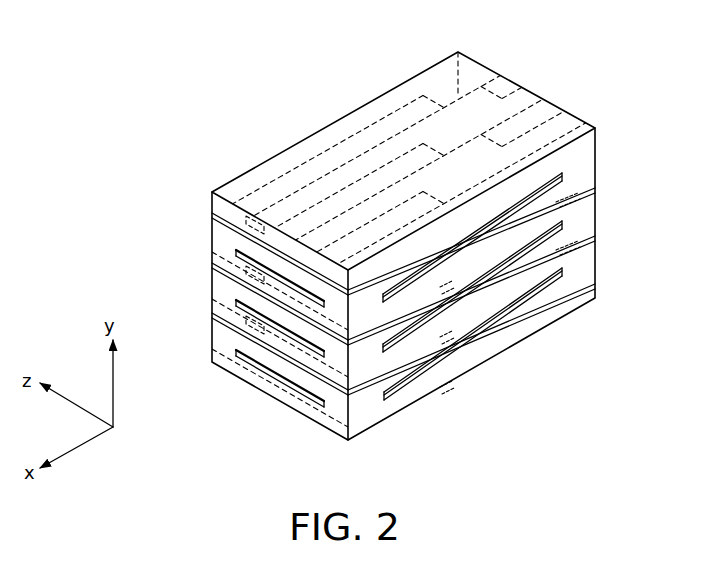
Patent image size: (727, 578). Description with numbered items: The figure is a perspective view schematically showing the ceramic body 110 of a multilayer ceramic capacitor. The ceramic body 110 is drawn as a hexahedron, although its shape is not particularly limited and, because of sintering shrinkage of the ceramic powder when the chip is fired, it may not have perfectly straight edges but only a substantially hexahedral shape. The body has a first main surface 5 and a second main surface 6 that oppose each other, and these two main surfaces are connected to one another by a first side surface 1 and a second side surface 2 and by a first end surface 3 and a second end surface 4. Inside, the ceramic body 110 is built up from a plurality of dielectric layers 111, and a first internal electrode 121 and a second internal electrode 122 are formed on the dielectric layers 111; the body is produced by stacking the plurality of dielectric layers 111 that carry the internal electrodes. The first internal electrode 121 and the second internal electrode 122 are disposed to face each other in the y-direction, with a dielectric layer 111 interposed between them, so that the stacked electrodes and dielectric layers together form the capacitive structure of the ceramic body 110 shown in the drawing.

The ceramic body 110 is at (201, 58).
The first side surface 1 is at (474, 288).
The second side surface 2 is at (362, 182).
The first end surface 3 is at (288, 326).
The second end surface 4 is at (510, 160).
The first main surface 5 is at (410, 161).
The second main surface 6 is at (447, 330).
The dielectric layer 111 is at (522, 236).
The first internal electrode 121 is at (224, 228).
The second internal electrode 122 is at (583, 189).